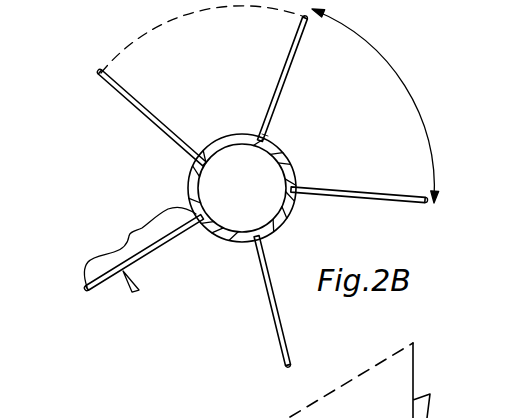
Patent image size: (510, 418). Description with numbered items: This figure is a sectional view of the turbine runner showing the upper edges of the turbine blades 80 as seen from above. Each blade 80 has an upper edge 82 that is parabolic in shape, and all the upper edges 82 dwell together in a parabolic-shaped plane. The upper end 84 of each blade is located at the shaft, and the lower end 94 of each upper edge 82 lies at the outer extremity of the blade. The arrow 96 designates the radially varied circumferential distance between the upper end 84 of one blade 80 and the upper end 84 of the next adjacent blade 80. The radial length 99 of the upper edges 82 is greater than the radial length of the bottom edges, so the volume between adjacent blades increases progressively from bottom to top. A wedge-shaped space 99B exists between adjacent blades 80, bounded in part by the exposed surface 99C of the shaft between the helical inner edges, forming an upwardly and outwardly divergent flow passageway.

The turbine blade 80 is at (132, 293).
The upper edge 82 is at (258, 263).
The upper end 84 is at (287, 247).
The lower end of upper edge 94 is at (62, 76).
The arrow 96 is at (392, 62).
The radial length 99 is at (129, 236).
The wedge-shaped space 99B is at (82, 22).
The exposed surface of shaft 99C is at (228, 137).